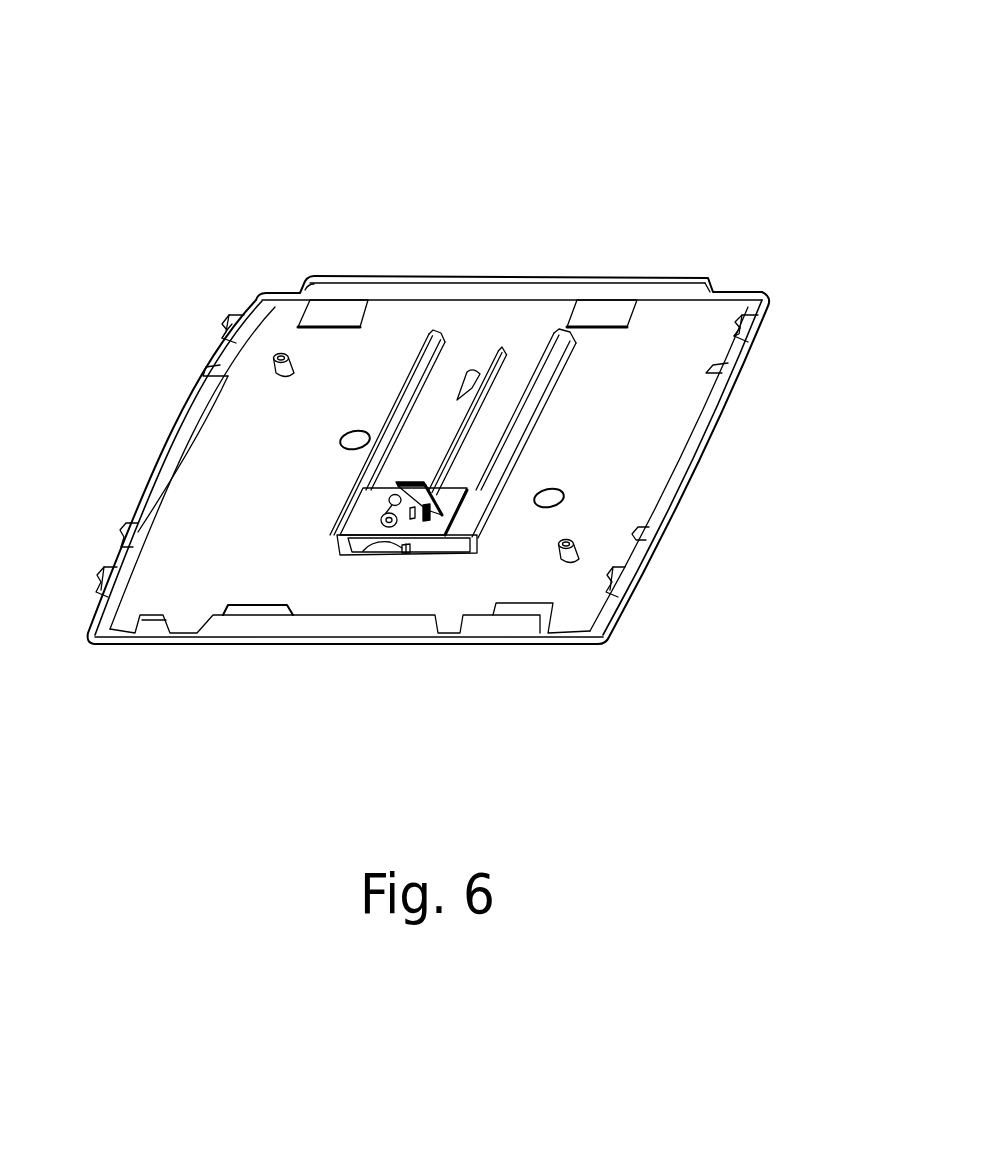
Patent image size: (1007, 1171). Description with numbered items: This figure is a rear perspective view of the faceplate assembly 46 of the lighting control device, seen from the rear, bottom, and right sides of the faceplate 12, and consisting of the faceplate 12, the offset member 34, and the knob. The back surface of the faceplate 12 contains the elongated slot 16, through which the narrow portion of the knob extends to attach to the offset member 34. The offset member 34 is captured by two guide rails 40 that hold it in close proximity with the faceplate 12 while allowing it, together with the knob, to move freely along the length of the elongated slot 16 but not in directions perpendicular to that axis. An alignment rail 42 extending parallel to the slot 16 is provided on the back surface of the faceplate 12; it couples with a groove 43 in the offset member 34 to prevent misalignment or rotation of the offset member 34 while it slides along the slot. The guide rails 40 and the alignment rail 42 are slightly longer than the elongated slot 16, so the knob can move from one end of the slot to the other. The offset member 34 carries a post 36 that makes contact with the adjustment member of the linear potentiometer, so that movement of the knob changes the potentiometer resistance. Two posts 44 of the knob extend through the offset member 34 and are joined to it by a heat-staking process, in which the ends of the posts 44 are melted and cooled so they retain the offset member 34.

The faceplate 12 is at (650, 395).
The elongated slot 16 is at (468, 370).
The offset member 34 is at (427, 525).
The post 36 is at (418, 498).
The guide rails 40 is at (425, 342).
The alignment rail 42 is at (506, 350).
The groove 43 is at (375, 548).
The posts 44 is at (392, 520).
The faceplate assembly 46 is at (458, 57).